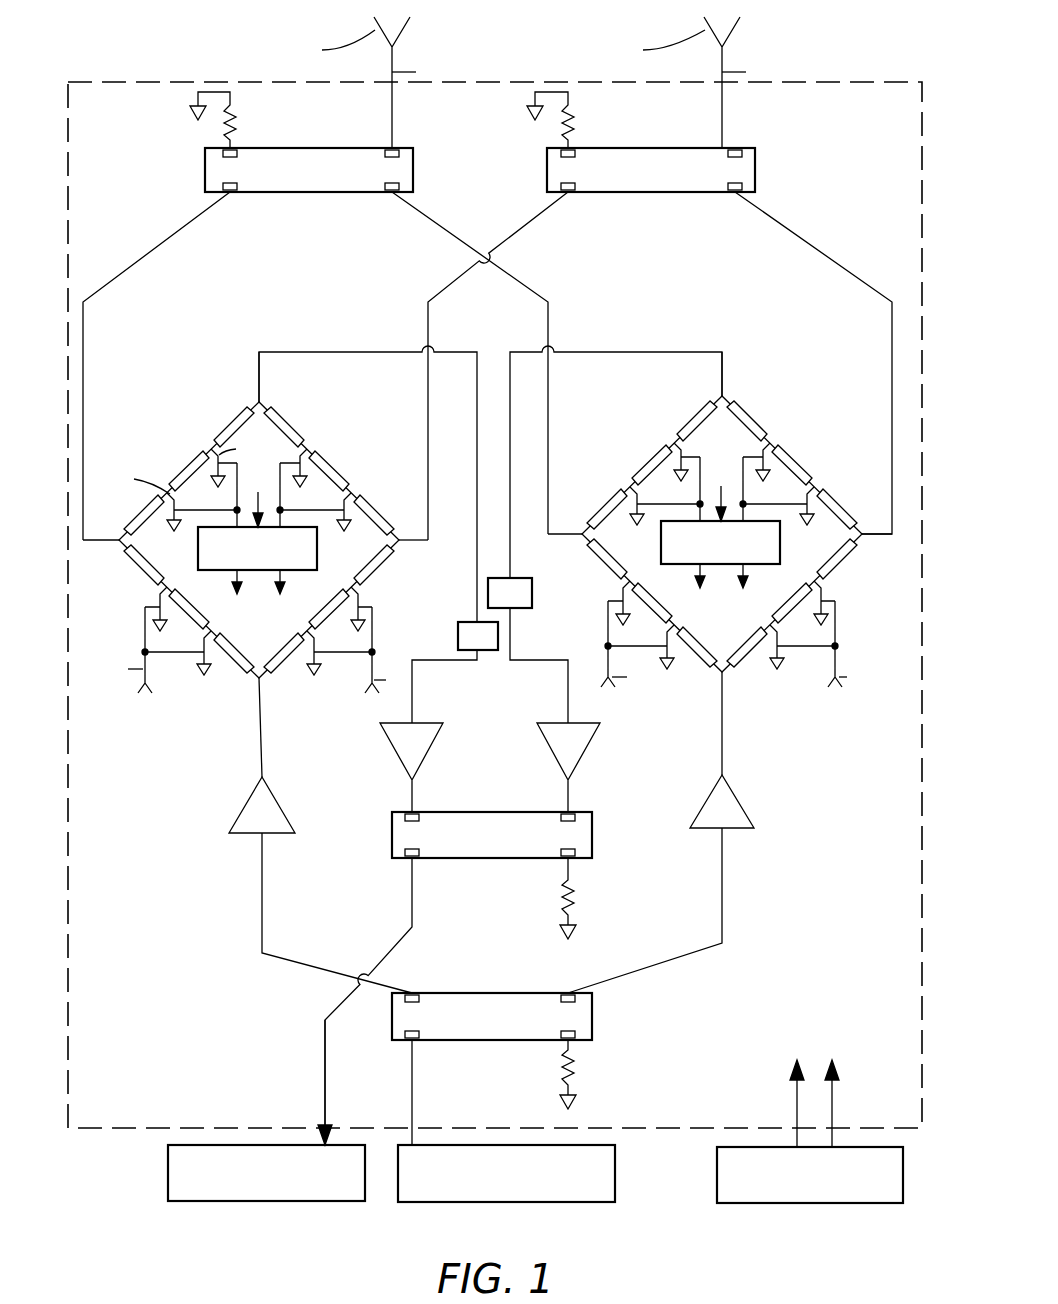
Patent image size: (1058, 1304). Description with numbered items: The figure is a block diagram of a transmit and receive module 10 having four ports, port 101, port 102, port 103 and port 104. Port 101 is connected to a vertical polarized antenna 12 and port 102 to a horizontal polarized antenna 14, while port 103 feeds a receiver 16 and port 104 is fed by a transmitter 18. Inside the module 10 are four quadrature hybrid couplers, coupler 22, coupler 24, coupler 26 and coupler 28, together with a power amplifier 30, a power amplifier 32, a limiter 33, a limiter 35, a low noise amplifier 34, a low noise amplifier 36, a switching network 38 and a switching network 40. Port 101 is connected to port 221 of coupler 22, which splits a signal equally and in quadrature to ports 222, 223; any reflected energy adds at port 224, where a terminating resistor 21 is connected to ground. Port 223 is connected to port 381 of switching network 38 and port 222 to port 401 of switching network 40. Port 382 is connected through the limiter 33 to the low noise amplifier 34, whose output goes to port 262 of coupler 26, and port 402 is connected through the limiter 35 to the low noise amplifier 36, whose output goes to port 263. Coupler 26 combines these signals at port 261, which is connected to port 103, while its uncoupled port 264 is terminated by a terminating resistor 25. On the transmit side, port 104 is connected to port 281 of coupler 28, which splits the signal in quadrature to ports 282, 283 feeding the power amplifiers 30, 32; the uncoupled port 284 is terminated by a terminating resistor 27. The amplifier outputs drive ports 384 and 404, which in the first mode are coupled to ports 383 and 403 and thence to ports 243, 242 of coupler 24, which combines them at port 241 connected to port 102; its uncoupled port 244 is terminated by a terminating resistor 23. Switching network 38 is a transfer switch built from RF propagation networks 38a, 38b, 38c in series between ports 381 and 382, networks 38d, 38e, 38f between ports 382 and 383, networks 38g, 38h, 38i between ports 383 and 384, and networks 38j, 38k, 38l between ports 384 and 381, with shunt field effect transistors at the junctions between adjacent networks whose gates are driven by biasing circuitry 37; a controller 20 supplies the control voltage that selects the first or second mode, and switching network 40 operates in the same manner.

The transmit and receive module 10 is at (870, 80).
The port 101 is at (420, 72).
The port 102 is at (750, 72).
The port 103 is at (325, 1108).
The port 104 is at (412, 1110).
The vertical polarized antenna 12 is at (296, 75).
The horizontal polarized antenna 14 is at (622, 75).
The receiver 16 is at (168, 1172).
The transmitter 18 is at (615, 1175).
The controller 20 is at (903, 1175).
The terminating resistor 21 is at (236, 114).
The quadrature hybrid coupler 22 is at (328, 177).
The port 221 is at (398, 150).
The port 222 is at (393, 192).
The port 223 is at (235, 192).
The port 224 is at (237, 150).
The terminating resistor 23 is at (574, 114).
The quadrature hybrid coupler 24 is at (662, 177).
The port 241 is at (737, 150).
The port 242 is at (735, 192).
The port 243 is at (568, 192).
The port 244 is at (575, 150).
The terminating resistor 25 is at (578, 900).
The quadrature hybrid coupler 26 is at (489, 839).
The port 261 is at (415, 858).
The port 262 is at (408, 812).
The port 263 is at (575, 812).
The port 264 is at (572, 860).
The terminating resistor 27 is at (574, 1075).
The quadrature hybrid coupler 28 is at (497, 1017).
The port 281 is at (408, 1040).
The port 282 is at (414, 993).
The port 283 is at (566, 993).
The port 284 is at (574, 1042).
The power amplifier 30 is at (275, 800).
The power amplifier 32 is at (738, 803).
The limiter 33 is at (463, 622).
The low noise amplifier 34 is at (432, 723).
The limiter 35 is at (532, 592).
The low noise amplifier 36 is at (592, 723).
The biasing circuitry 37 is at (318, 552).
The switching network 38 is at (252, 564).
The port 381 is at (112, 545).
The port 382 is at (266, 400).
The port 383 is at (399, 542).
The port 384 is at (264, 682).
The RF propagation network 38a is at (143, 520).
The RF propagation network 38b is at (184, 465).
The RF propagation network 38c is at (228, 425).
The RF propagation network 38d is at (288, 430).
The RF propagation network 38e is at (334, 470).
The RF propagation network 38f is at (372, 508).
The RF propagation network 38g is at (370, 582).
The RF propagation network 38h is at (326, 619).
The transmission line segment 38i is at (292, 668).
The RF propagation network 38j is at (237, 670).
The RF propagation network 38k is at (185, 607).
The RF propagation network 38l is at (143, 572).
The switching network 40 is at (730, 563).
The port 401 is at (567, 533).
The port 402 is at (727, 394).
The port 403 is at (866, 536).
The port 404 is at (725, 678).